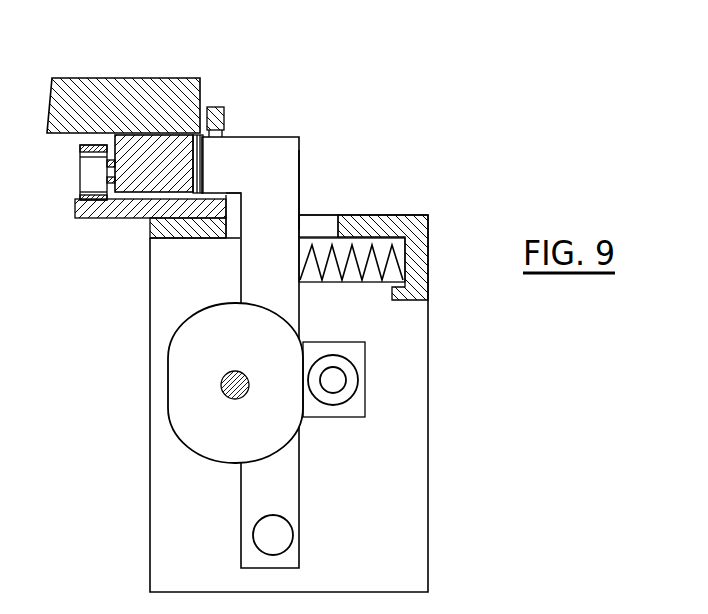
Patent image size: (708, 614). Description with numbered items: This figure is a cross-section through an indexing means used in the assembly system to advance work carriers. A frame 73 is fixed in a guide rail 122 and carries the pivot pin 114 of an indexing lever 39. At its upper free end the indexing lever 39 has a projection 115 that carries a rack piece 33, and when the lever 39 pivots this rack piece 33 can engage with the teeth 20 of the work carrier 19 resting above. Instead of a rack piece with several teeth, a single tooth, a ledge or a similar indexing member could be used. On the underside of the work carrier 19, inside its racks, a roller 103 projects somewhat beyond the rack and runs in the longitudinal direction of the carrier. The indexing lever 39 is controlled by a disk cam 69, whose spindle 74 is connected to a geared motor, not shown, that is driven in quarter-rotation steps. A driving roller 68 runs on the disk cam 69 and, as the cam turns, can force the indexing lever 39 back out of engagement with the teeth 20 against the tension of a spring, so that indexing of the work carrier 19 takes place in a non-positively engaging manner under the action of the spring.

The work carrier 19 is at (217, 72).
The teeth 20 is at (190, 146).
The rack piece 33 is at (200, 169).
The projection 115 is at (245, 162).
The indexing lever 39 is at (287, 198).
The roller 103 is at (87, 170).
The guide rail 122 is at (97, 211).
The frame 73 is at (417, 350).
The spindle 74 is at (221, 383).
The driving roller 68 is at (353, 385).
The disk cam 69 is at (202, 446).
The pivot pin 114 is at (280, 533).